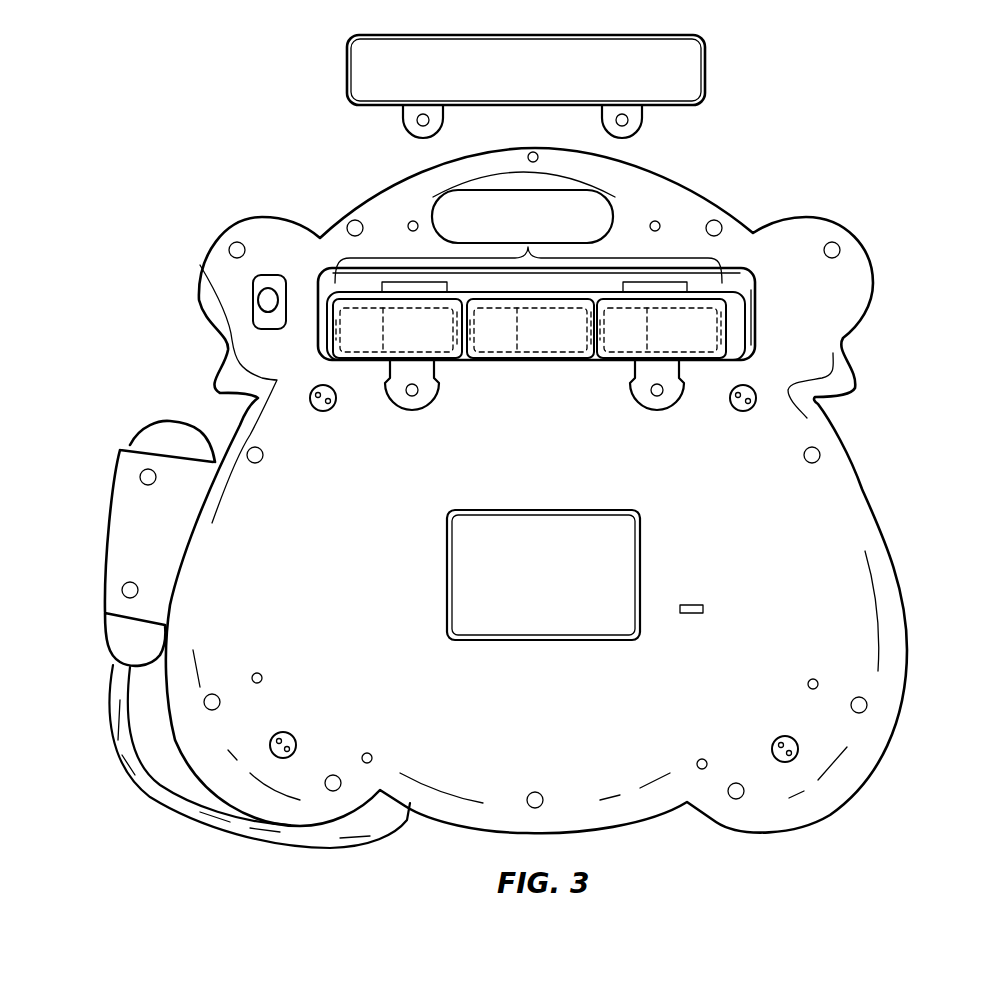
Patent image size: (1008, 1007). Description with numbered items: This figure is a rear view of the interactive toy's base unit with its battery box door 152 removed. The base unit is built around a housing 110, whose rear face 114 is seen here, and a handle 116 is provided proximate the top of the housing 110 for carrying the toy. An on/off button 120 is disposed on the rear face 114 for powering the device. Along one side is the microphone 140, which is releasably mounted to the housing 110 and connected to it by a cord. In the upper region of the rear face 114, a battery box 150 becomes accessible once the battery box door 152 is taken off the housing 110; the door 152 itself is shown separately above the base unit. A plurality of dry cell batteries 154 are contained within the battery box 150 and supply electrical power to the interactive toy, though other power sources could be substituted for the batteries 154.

The housing 110 is at (735, 505).
The rear face 114 is at (777, 586).
The handle 116 is at (655, 172).
The on/off button 120 is at (262, 300).
The microphone 140 is at (127, 447).
The battery box 150 is at (740, 268).
The battery box door 152 is at (545, 83).
The dry cell batteries 154 is at (529, 247).